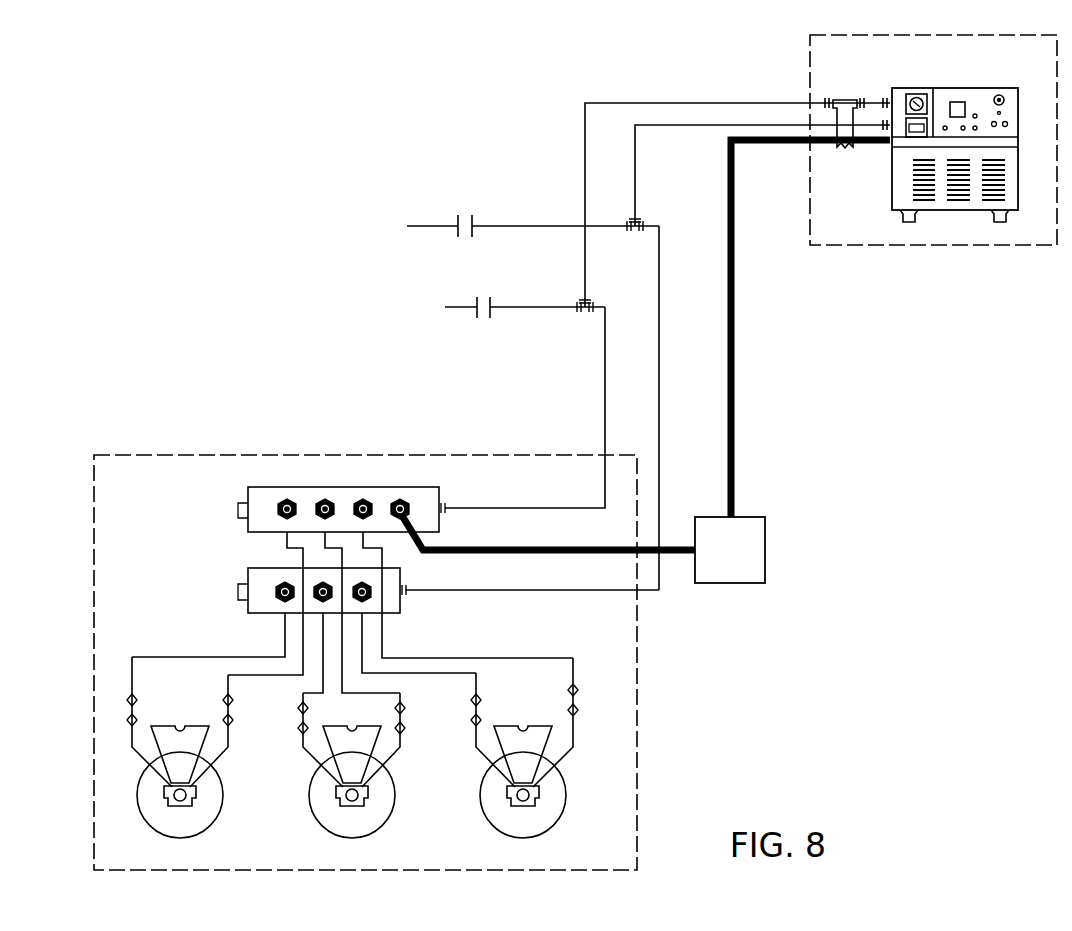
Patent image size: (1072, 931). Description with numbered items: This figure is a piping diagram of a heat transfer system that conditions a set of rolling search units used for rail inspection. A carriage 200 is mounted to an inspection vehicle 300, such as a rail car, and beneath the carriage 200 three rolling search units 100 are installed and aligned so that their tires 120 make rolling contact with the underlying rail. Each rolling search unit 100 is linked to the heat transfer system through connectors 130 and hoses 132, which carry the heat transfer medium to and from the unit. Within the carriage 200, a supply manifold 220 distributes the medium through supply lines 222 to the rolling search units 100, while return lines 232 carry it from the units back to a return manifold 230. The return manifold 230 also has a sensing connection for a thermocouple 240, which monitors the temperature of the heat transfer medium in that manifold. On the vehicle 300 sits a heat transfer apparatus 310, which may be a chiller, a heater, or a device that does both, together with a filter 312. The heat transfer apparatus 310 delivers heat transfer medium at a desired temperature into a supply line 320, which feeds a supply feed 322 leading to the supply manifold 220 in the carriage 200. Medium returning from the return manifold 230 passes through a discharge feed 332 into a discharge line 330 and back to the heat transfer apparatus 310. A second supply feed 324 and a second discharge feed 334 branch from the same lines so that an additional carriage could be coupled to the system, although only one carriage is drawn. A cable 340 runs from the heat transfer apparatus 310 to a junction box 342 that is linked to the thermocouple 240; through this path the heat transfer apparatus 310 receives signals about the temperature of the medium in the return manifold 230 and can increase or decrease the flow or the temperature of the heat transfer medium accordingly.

The rolling search unit 100 is at (357, 761).
The tire 120 is at (318, 817).
The connector 130 is at (226, 710).
The hose 132 is at (136, 754).
The carriage 200 is at (208, 455).
The supply manifold 220 is at (248, 580).
The supply lines 222 is at (205, 657).
The return manifold 230 is at (273, 487).
The return lines 232 is at (380, 548).
The thermocouple 240 is at (515, 550).
The inspection vehicle 300 is at (990, 245).
The heat transfer apparatus 310 is at (972, 88).
The filter 312 is at (843, 98).
The supply line 320 is at (636, 158).
The supply feed 322 is at (660, 312).
The supply feed 324 is at (505, 224).
The discharge line 330 is at (648, 103).
The discharge feed 332 is at (605, 358).
The discharge feed 334 is at (528, 306).
The electrical cable 340 is at (735, 327).
The junction box 342 is at (752, 517).